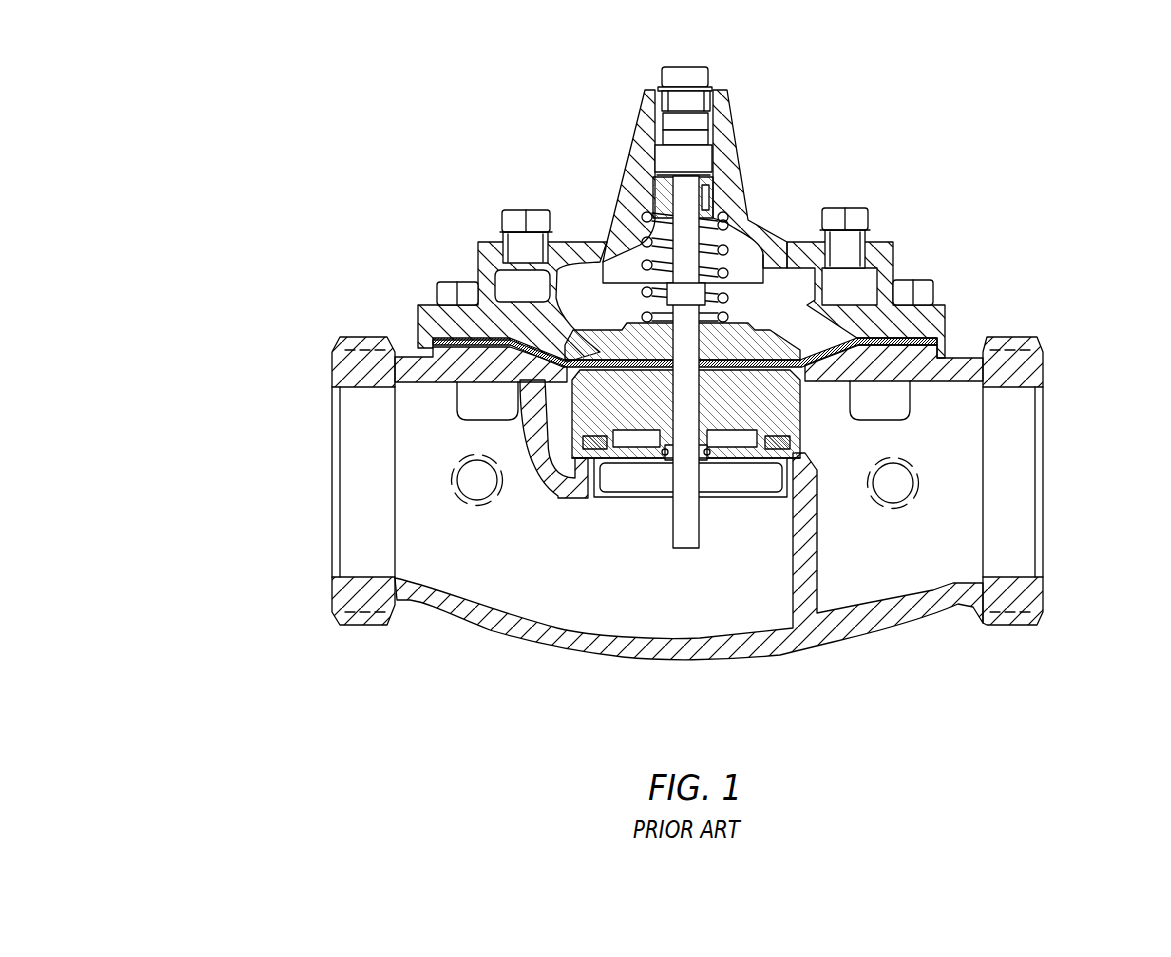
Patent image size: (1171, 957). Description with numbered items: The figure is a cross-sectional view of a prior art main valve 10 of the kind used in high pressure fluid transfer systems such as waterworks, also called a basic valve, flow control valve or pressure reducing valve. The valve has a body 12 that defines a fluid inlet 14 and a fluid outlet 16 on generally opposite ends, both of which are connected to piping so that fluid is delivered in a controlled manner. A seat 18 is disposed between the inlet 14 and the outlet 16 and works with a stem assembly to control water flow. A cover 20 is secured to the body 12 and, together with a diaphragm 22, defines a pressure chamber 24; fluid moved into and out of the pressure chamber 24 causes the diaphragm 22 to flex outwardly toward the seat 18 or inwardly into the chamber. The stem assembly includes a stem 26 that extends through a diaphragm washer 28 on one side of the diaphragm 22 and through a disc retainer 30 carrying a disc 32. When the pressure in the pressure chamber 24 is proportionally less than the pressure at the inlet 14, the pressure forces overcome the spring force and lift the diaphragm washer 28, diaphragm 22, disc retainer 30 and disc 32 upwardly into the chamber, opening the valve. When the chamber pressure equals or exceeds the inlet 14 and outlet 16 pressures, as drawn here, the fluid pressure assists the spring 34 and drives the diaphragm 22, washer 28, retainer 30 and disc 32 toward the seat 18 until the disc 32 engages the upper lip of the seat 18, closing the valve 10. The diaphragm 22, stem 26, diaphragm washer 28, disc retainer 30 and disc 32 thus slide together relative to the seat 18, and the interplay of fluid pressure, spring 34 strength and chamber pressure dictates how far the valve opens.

The main valve 10 is at (291, 186).
The body 12 is at (487, 620).
The fluid inlet 14 is at (355, 500).
The fluid outlet 16 is at (1005, 525).
The seat 18 is at (608, 490).
The cover 20 is at (727, 135).
The diaphragm 22 is at (857, 342).
The pressure chamber 24 is at (782, 290).
The stem 26 is at (681, 540).
The diaphragm washer 28 is at (617, 343).
The disc retainer 30 is at (767, 410).
The disc 32 is at (594, 447).
The spring 34 is at (647, 325).